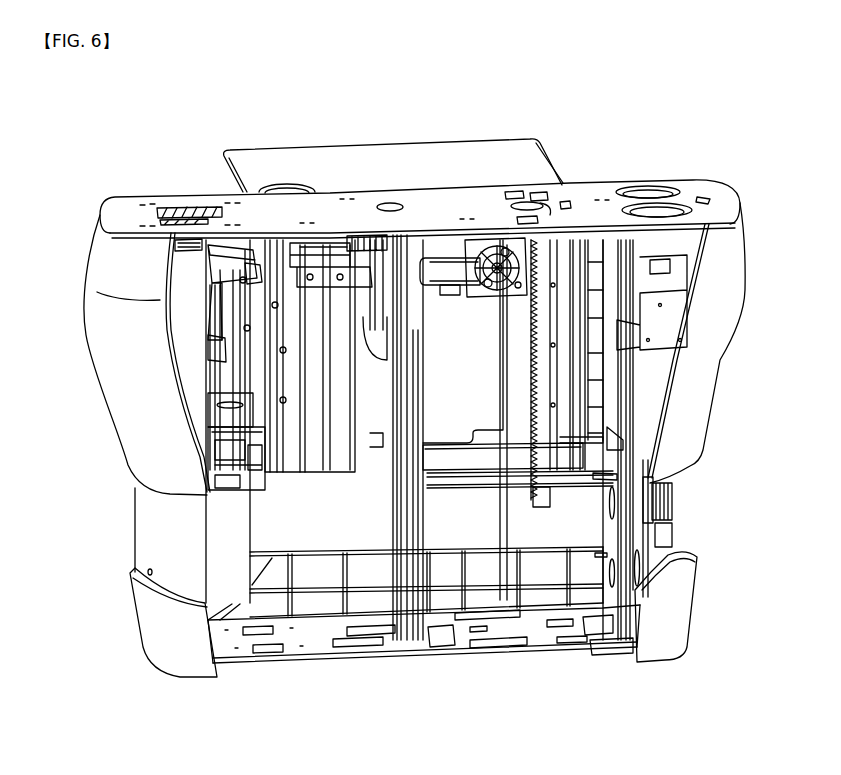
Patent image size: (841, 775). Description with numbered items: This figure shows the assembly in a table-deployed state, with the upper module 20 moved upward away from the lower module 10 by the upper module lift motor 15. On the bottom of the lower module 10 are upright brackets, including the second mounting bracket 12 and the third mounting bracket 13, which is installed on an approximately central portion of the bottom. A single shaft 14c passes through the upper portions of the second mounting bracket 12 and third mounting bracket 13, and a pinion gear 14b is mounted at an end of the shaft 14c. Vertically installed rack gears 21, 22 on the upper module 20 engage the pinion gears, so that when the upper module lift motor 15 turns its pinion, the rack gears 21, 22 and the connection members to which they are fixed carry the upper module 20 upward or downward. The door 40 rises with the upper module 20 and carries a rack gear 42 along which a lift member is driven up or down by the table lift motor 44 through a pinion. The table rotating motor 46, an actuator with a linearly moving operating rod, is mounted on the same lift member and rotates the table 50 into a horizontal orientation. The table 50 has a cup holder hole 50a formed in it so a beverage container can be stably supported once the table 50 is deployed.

The lower module 10 is at (150, 622).
The second mounting bracket 12 is at (615, 605).
The third mounting bracket 13 is at (430, 592).
The pinion gear 14b is at (400, 445).
The shaft 14c is at (503, 480).
The upper module lift motor 15 is at (672, 500).
The upper module 20 is at (120, 399).
The rack gear 21 is at (630, 403).
The rack gear 22 is at (393, 450).
The door 40 is at (262, 318).
The rack gear 42 is at (555, 290).
The table lift motor 44 is at (500, 240).
The table rotating motor 46 is at (325, 238).
The table 50 is at (405, 155).
The cup holder hole 50a is at (285, 182).